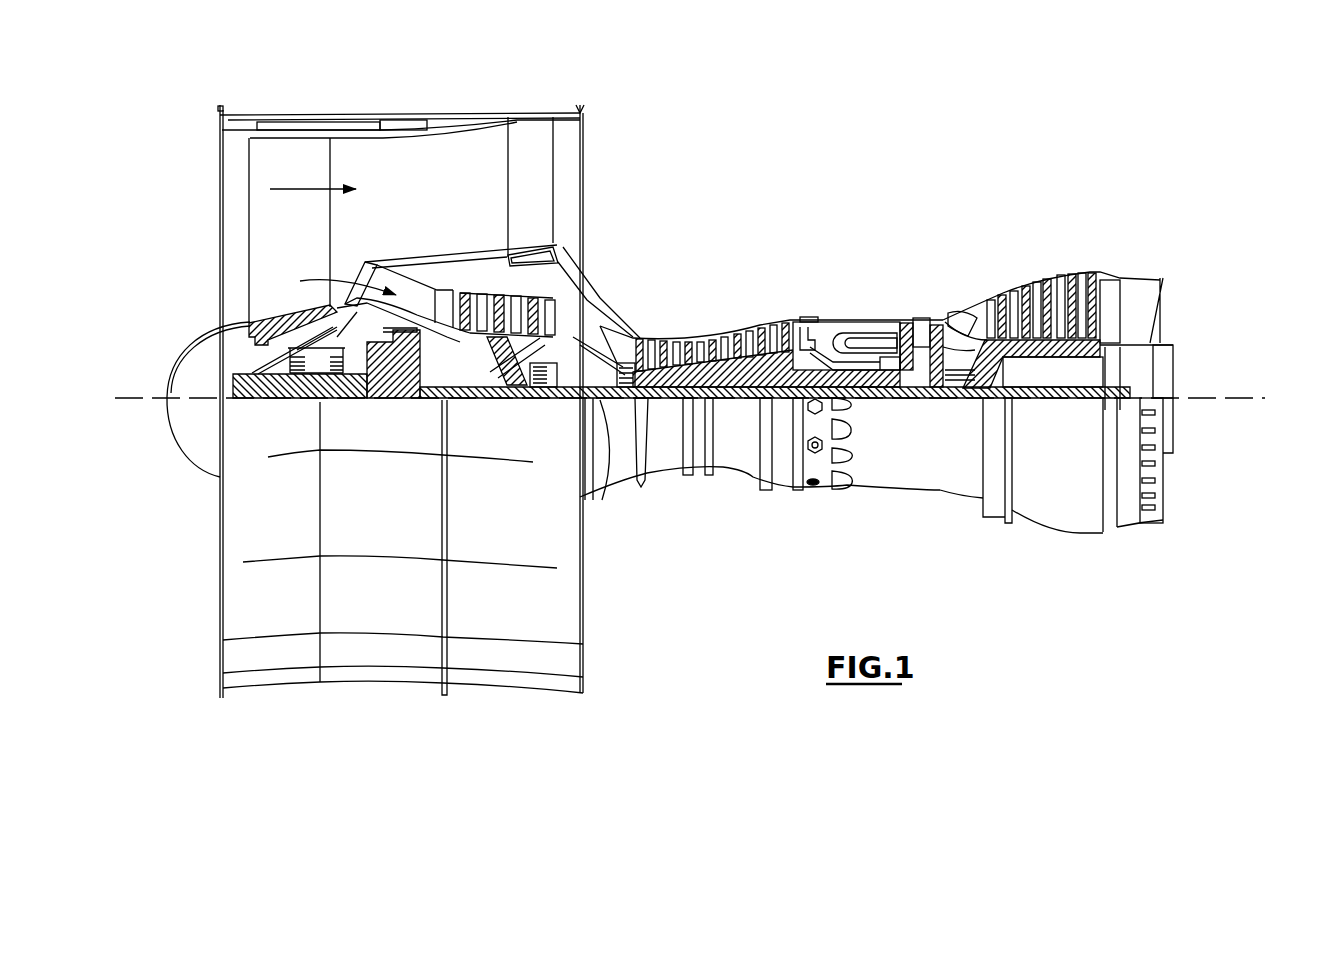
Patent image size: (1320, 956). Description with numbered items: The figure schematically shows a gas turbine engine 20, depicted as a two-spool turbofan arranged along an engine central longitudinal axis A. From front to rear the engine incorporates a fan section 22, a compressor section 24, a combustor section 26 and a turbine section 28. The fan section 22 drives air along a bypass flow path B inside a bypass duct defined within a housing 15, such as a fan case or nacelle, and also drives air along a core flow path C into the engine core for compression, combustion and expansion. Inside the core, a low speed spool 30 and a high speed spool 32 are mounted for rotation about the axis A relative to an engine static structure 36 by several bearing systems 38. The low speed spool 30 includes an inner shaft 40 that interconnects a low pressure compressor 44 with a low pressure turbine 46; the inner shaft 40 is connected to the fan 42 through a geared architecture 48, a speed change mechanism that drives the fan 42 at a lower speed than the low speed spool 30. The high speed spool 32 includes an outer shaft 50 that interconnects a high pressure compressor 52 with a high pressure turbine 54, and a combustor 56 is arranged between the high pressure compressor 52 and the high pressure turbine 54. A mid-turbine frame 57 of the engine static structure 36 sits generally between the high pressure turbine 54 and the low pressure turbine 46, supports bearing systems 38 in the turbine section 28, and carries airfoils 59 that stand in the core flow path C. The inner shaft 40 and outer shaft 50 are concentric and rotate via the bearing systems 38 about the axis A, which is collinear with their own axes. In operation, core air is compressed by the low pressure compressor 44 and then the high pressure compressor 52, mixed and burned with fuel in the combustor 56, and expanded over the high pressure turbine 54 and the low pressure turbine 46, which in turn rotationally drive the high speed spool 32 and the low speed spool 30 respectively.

The gas turbine engine 20 is at (862, 165).
The fan section 22 is at (328, 106).
The housing 15 is at (401, 118).
The fan 42 is at (304, 247).
The low pressure compressor 44 is at (507, 305).
The compressor section 24 is at (634, 300).
The high pressure compressor 52 is at (698, 337).
The high speed spool 32 is at (784, 328).
The combustor section 26 is at (854, 293).
The combustor 56 is at (858, 337).
The high pressure turbine 54 is at (921, 316).
The mid-turbine frame 57 is at (965, 304).
The turbine section 28 is at (1005, 256).
The low pressure turbine 46 is at (1050, 290).
The airfoils 59 is at (1000, 367).
The bearing systems 38 is at (541, 392).
The geared architecture 48 is at (406, 386).
The low speed spool 30 is at (742, 404).
The engine static structure 36 is at (782, 490).
The inner shaft 40 is at (610, 490).
The outer shaft 50 is at (867, 400).
The engine central longitudinal axis A is at (1250, 398).
The bypass flow path B is at (305, 188).
The core flow path C is at (339, 284).